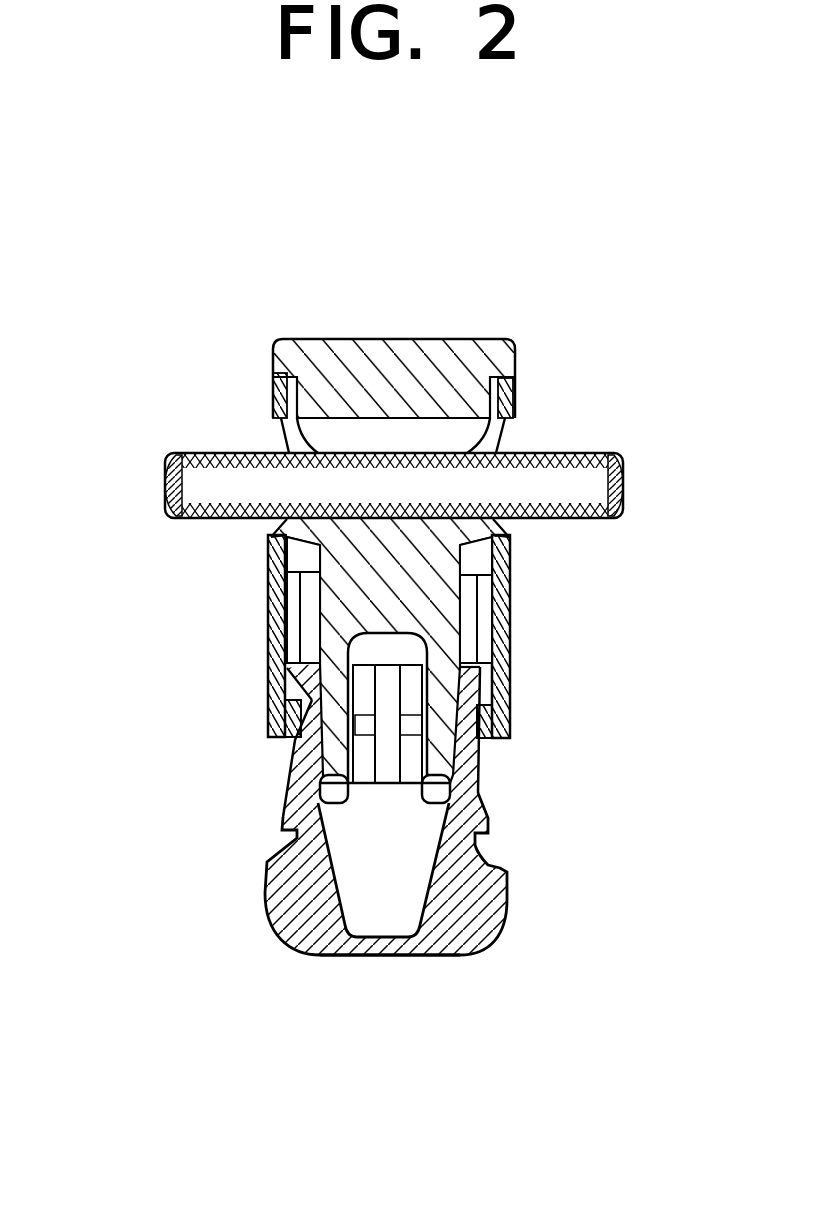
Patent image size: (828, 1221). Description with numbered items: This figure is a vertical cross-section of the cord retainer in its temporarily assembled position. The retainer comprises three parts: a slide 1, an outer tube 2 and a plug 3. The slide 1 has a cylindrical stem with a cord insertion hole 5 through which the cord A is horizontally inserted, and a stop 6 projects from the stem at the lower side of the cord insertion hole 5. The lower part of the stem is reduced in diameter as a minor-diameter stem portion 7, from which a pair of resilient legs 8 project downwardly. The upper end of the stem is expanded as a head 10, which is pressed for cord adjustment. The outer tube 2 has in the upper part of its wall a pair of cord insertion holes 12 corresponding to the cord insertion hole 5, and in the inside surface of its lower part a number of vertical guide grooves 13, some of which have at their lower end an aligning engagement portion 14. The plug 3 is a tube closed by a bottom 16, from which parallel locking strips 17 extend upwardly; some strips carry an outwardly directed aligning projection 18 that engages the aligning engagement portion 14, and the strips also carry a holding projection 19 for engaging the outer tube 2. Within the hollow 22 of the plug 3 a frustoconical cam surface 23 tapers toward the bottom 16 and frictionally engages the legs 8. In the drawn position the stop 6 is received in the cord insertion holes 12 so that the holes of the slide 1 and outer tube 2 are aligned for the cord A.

The slide 1 is at (392, 322).
The outer tube 2 is at (236, 634).
The plug 3 is at (245, 896).
The cord insertion hole 5 is at (393, 435).
The stop 6 is at (505, 552).
The minor-diameter stem portion 7 is at (370, 580).
The resilient legs 8 is at (293, 743).
The head 10 is at (314, 357).
The cord insertion holes 12 is at (512, 432).
The guide grooves 13 is at (273, 657).
The aligning engagement portion 14 is at (273, 710).
The bottom 16 is at (384, 955).
The locking strips 17 is at (477, 763).
The aligning projection 18 is at (473, 688).
The holding projection 19 is at (490, 823).
The hollow 22 is at (478, 933).
The frustoconical cam surface 23 is at (403, 900).
The cord A is at (228, 477).